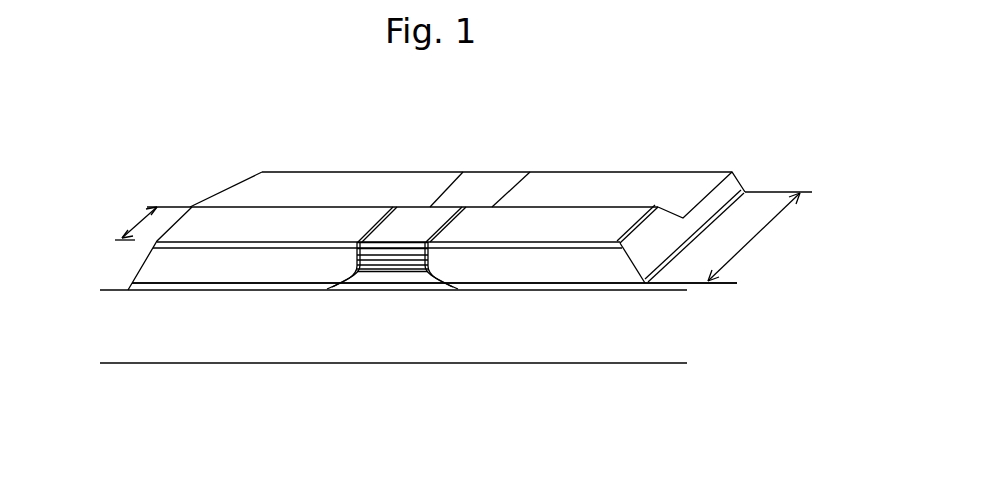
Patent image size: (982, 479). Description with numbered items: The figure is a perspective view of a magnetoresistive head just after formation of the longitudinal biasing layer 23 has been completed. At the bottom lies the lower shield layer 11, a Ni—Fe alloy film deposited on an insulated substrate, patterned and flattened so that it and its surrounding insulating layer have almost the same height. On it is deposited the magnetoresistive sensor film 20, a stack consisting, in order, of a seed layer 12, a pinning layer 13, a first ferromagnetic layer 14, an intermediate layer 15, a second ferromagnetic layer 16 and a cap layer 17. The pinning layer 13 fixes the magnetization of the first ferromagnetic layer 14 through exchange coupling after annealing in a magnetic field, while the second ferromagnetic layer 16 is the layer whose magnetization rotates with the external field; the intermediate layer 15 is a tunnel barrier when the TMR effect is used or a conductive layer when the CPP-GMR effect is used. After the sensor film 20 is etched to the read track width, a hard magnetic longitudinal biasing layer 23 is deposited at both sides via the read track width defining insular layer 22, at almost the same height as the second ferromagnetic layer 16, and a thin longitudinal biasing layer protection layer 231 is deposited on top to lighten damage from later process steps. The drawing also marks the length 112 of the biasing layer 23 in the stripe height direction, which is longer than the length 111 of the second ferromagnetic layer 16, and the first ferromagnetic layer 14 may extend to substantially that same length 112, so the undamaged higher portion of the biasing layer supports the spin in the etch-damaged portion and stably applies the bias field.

The lower shield layer 11 is at (597, 320).
The seed layer 12 is at (373, 273).
The pinning layer 13 is at (385, 268).
The first ferromagnetic layer 14 is at (397, 265).
The intermediate layer 15 is at (407, 256).
The second ferromagnetic layer 16 is at (405, 247).
The cap layer 17 is at (412, 246).
The magnetoresistive sensor film 20 is at (465, 190).
The read track width defining insular layer 22 is at (633, 290).
The longitudinal biasing layer 23 is at (685, 217).
The longitudinal biasing layer protection layer 231 is at (645, 220).
The length of the second ferromagnetic layer in the stripe height direction 111 is at (136, 224).
The length of the longitudinal biasing layer in the stripe height direction 112 is at (767, 227).